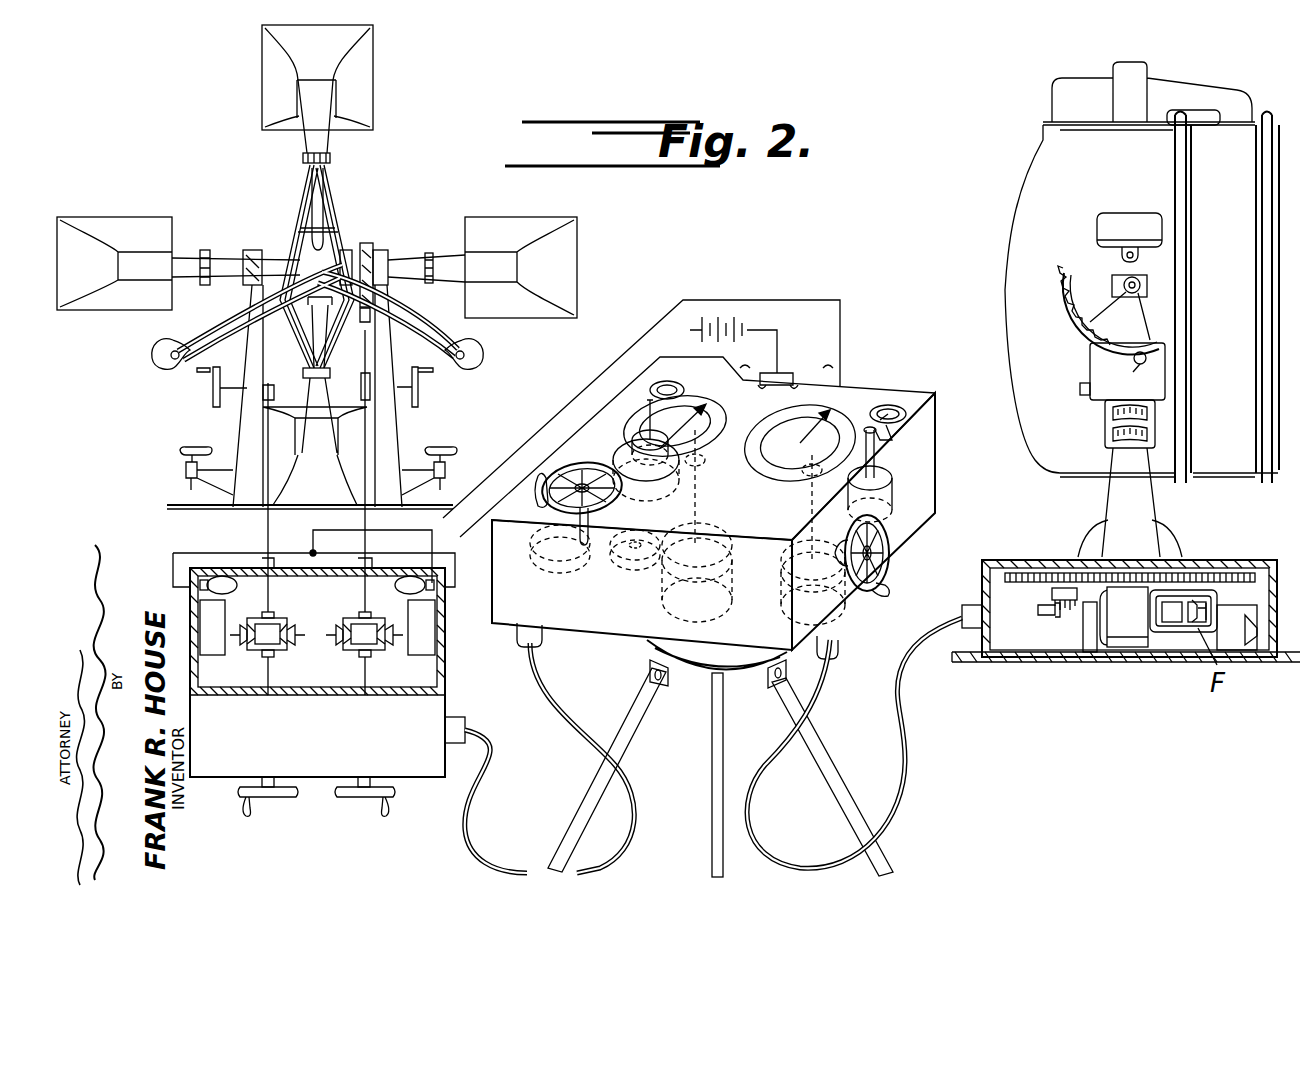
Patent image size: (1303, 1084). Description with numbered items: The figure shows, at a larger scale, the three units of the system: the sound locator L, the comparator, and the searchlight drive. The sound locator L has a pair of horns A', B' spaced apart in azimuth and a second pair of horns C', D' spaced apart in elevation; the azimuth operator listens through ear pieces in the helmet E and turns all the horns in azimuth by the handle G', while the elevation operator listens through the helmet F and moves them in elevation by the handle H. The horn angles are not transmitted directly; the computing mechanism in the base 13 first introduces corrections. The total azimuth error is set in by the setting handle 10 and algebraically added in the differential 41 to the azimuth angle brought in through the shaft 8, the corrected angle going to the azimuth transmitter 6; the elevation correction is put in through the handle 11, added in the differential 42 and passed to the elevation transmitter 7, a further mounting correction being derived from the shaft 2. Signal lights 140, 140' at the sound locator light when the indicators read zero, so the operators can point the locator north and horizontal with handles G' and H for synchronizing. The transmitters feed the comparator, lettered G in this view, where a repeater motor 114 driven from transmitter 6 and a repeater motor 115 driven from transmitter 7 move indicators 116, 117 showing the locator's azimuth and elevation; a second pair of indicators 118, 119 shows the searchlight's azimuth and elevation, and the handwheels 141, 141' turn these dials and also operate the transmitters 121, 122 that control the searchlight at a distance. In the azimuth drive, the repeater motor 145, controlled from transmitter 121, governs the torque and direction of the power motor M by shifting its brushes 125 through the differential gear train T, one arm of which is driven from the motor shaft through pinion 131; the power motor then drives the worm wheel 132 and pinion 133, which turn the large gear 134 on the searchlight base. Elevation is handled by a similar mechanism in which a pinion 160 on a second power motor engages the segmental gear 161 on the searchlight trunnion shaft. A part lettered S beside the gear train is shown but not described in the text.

The horn A' is at (114, 248).
The horn B' is at (521, 251).
The horn C' is at (338, 89).
The horn D' is at (315, 436).
The helmet E is at (152, 354).
The helmet F is at (478, 354).
The handle G' is at (222, 373).
The handle H is at (415, 373).
The sound locator L is at (374, 255).
The shaft 8 is at (270, 503).
The shaft 2 is at (363, 502).
The base 13 is at (447, 640).
The azimuth transmitter 6 is at (212, 627).
The elevation transmitter 7 is at (421, 627).
The differential 41 is at (262, 640).
The differential 42 is at (370, 640).
The setting handle 10 is at (251, 814).
The handle 11 is at (381, 813).
The signal light 140 is at (408, 560).
The signal light 140' is at (193, 558).
The control console G is at (713, 597).
The repeater motor 114 is at (637, 437).
The repeater motor 115 is at (893, 484).
The indicator 116 is at (705, 420).
The indicator 117 is at (838, 410).
The indicator 118 is at (684, 405).
The indicator 119 is at (800, 443).
The transmitter 121 is at (662, 592).
The transmitter 122 is at (788, 605).
The handwheel 141 is at (561, 511).
The handwheel 141' is at (896, 555).
The pinion 160 is at (1122, 371).
The segmental gear 161 is at (1068, 320).
The pinion 133 is at (1068, 586).
The worm wheel 132 is at (1038, 612).
The pinion 131 is at (1083, 620).
The large gear 134 is at (1258, 578).
The switch S is at (1196, 596).
The differential gear train T is at (1206, 602).
The repeater motor 145 is at (1238, 622).
The power motor M is at (1127, 632).
The brushes 125 is at (1165, 628).